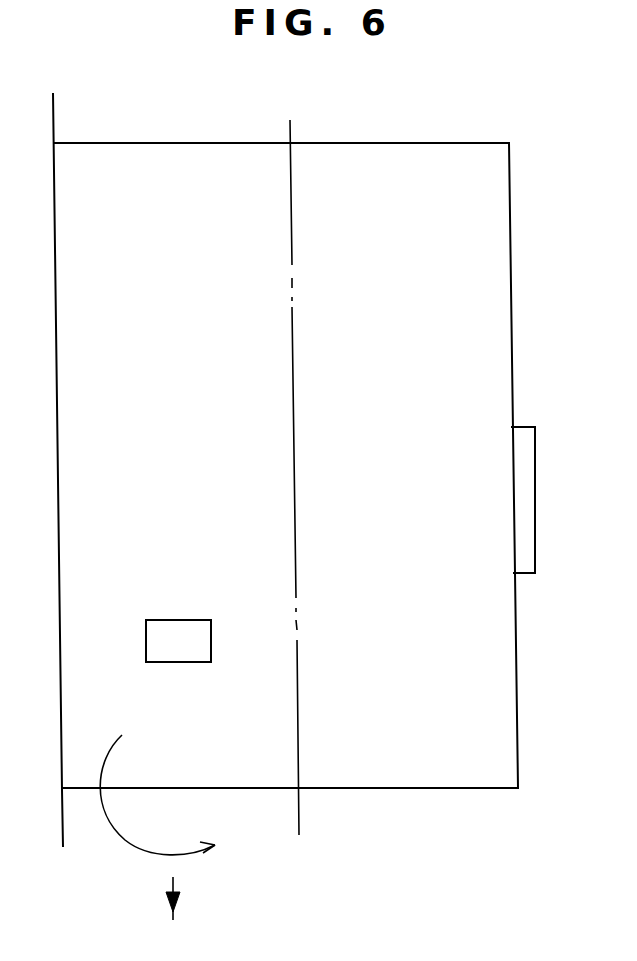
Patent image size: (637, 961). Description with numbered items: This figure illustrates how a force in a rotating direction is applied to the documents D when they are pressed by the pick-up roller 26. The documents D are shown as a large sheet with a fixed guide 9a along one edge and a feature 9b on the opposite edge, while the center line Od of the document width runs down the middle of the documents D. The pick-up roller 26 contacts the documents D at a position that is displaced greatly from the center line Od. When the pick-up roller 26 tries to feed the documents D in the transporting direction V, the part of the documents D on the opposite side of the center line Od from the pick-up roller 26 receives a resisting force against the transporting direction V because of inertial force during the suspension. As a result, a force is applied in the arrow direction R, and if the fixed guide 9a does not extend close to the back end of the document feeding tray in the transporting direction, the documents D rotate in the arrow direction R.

The documents D is at (364, 172).
The fixed guide 9a is at (53, 111).
The tab on right edge of document 9b is at (535, 455).
The pick-up roller 26 is at (170, 620).
The center line of the document width Od is at (302, 497).
The arrow direction R is at (146, 795).
The transporting direction V is at (189, 898).